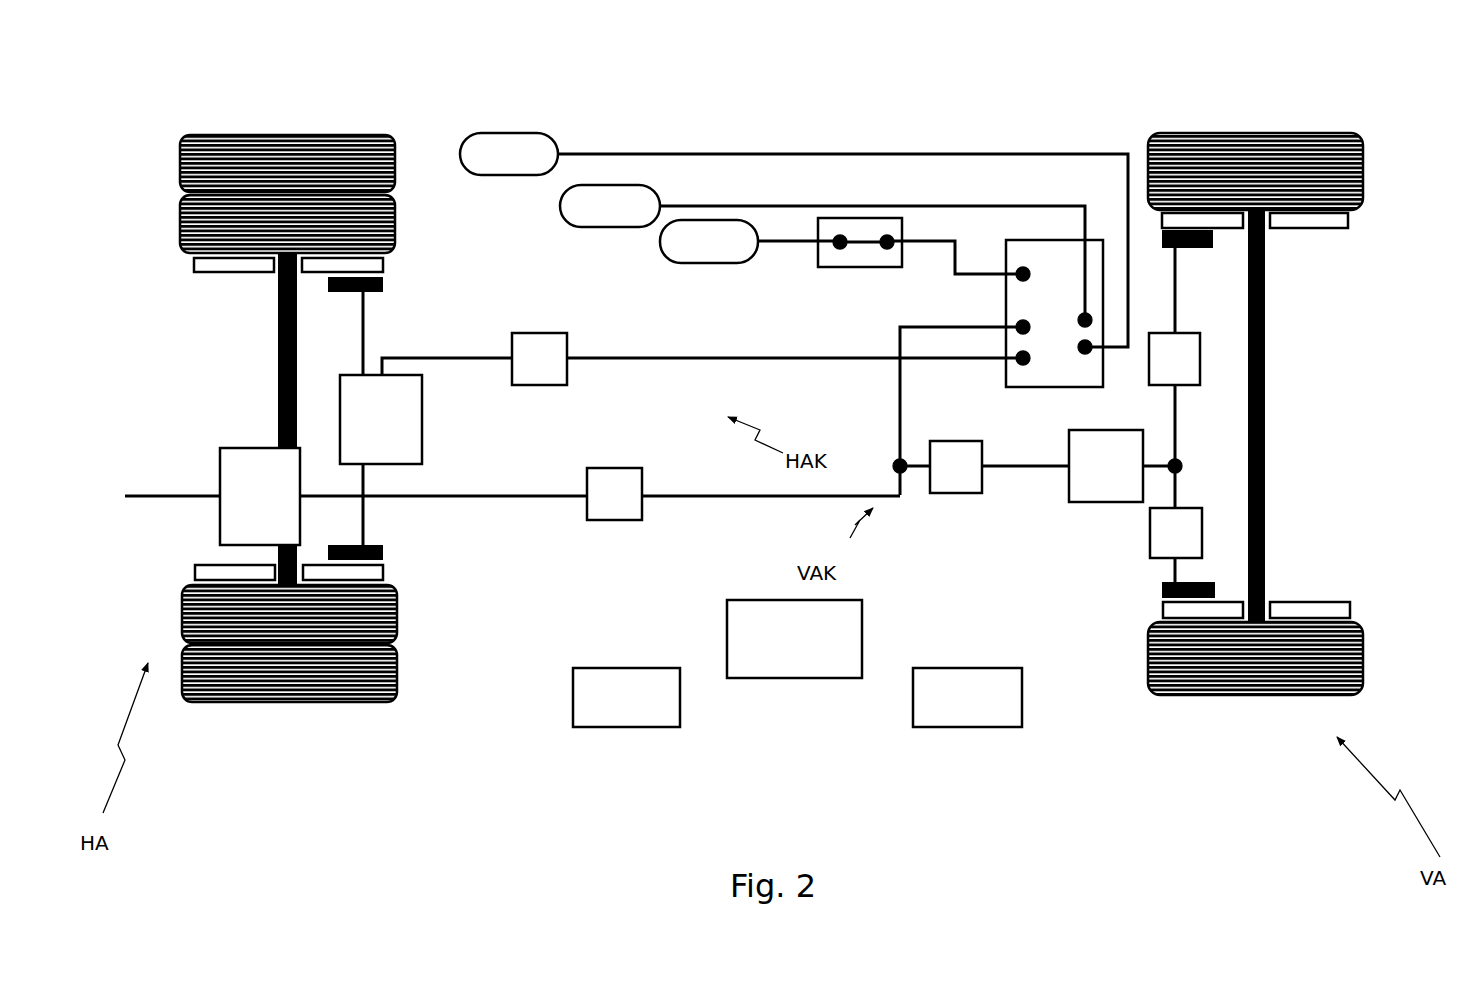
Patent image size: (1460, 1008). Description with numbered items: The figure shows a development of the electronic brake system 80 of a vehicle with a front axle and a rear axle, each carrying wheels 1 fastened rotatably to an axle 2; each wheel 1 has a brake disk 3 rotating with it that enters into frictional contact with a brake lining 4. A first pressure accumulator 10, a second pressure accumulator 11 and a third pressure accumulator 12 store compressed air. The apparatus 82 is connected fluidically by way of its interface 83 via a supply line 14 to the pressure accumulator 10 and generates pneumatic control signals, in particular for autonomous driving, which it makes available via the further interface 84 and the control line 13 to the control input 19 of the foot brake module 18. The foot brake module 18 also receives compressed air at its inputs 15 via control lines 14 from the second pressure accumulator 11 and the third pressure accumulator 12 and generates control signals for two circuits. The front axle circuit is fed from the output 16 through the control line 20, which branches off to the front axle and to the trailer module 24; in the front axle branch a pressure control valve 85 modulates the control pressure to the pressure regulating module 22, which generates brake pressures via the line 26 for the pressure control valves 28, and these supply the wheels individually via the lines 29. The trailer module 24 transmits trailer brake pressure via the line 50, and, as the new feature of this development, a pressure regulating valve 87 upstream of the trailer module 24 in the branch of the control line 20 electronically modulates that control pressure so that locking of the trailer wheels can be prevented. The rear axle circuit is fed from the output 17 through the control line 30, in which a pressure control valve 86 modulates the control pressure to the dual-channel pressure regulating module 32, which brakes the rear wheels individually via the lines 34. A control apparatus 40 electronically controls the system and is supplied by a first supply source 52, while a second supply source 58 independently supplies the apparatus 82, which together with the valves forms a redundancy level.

The wheel 1 is at (270, 148).
The axle 2 is at (278, 330).
The brake disk 3 is at (215, 272).
The brake lining 4 is at (347, 292).
The first pressure accumulator 10 is at (660, 250).
The second pressure accumulator 11 is at (632, 185).
The third pressure accumulator 12 is at (505, 128).
The control line 13 is at (945, 243).
The supply line 14 is at (795, 240).
The input of foot brake module 15 is at (1080, 312).
The output of foot brake module 16 is at (1015, 324).
The output of foot brake module 17 is at (1015, 362).
The foot brake module 18 is at (1060, 390).
The control input of foot brake module 19 is at (1015, 268).
The control line 20 is at (897, 420).
The pressure regulating module 22 is at (1075, 503).
The trailer module 24 is at (220, 455).
The line 26 is at (1185, 466).
The pressure control valve 28 is at (1180, 385).
The line 29 is at (1178, 268).
The control line 30 is at (630, 360).
The pressure regulating module 32 is at (425, 455).
The line 34 is at (385, 342).
The control apparatus 40 is at (788, 678).
The line 50 is at (128, 497).
The first supply source 52 is at (1012, 727).
The second supply source 58 is at (592, 727).
The electronic brake system 80 is at (465, 727).
The apparatus 82 is at (815, 265).
The interface of apparatus 83 is at (843, 238).
The interface of apparatus 84 is at (885, 250).
The pressure control valve 85 is at (945, 495).
The pressure control valve 86 is at (540, 333).
The pressure regulating valve 87 is at (622, 468).